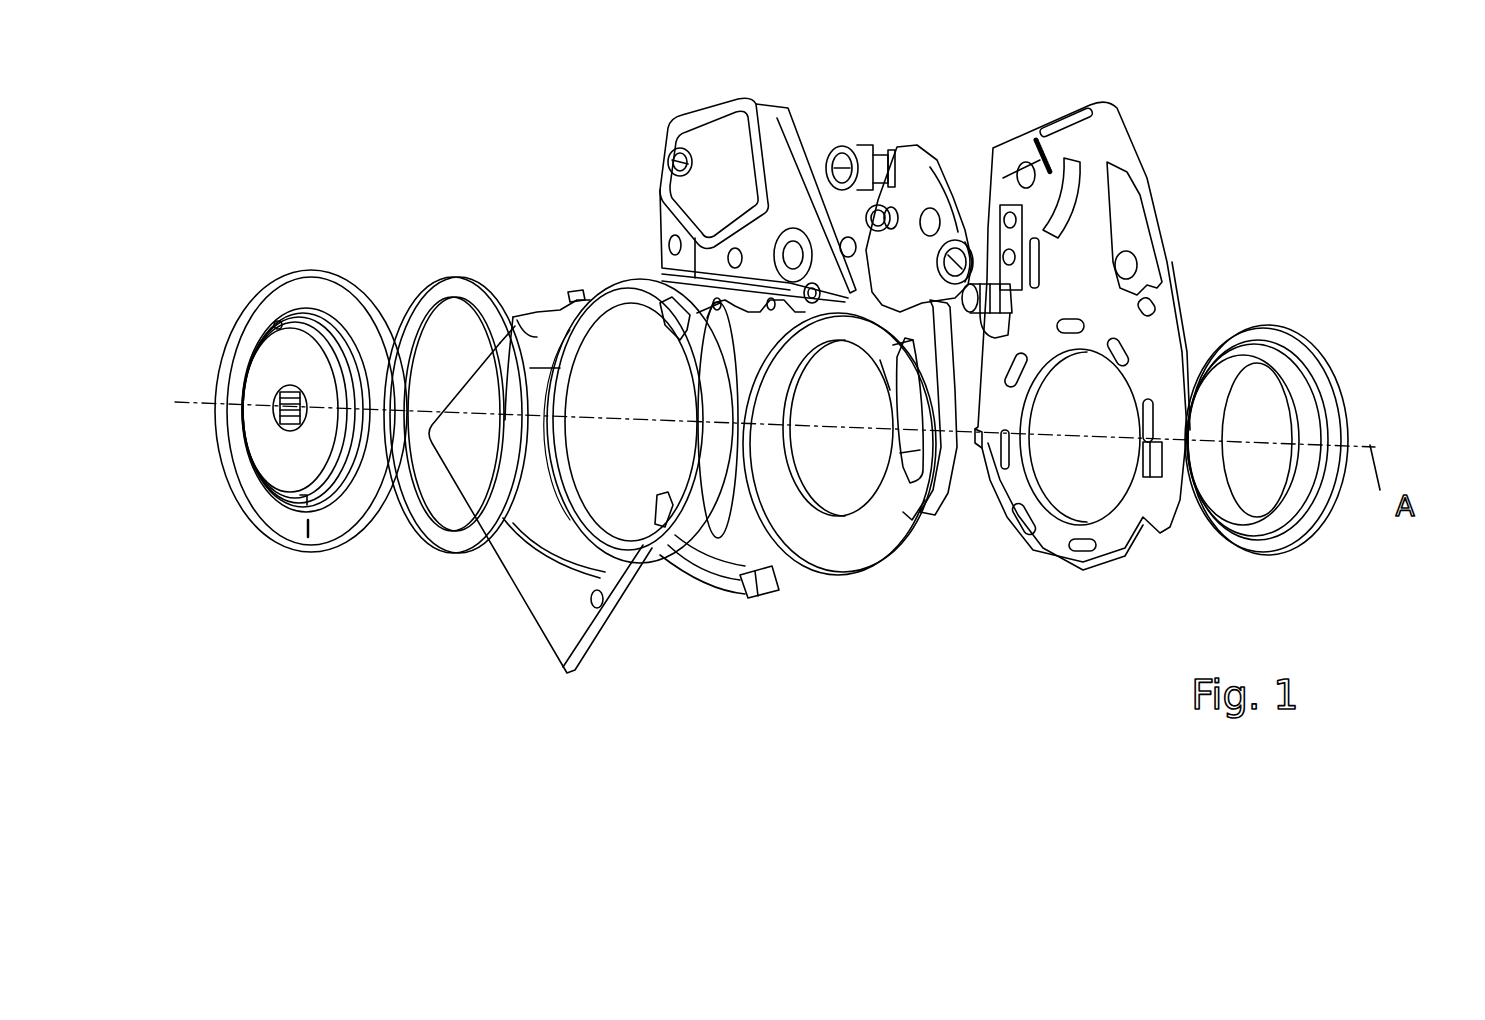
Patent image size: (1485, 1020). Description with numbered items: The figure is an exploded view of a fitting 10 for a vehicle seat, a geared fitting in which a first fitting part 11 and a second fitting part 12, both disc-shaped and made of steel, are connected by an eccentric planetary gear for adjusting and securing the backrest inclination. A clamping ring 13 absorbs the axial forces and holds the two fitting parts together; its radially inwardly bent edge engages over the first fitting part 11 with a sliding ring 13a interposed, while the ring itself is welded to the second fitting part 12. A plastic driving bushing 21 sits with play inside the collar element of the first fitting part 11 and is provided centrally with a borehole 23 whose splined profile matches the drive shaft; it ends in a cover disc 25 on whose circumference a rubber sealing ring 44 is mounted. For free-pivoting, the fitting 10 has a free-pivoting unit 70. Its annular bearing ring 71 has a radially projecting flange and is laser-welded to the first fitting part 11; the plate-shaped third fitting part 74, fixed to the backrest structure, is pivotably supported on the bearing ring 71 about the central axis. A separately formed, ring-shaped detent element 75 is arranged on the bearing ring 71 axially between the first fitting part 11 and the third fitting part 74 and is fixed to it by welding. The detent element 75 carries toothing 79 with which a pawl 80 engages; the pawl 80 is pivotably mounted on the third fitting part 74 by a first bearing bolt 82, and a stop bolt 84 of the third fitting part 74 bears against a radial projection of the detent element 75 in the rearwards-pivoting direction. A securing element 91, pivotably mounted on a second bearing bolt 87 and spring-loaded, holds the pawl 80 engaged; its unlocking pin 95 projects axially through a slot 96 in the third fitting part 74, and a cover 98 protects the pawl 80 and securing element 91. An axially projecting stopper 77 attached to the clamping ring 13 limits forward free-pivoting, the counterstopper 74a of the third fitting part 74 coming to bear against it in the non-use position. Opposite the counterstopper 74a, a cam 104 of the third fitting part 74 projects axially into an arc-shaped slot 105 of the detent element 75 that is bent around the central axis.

The fitting 10 is at (532, 180).
The first fitting part 11 is at (404, 400).
The second fitting part 12 is at (298, 417).
The clamping ring 13 is at (670, 545).
The sliding ring 13a is at (708, 476).
The driving bushing 21 is at (266, 476).
The borehole 23 is at (300, 392).
The cover disc 25 is at (263, 368).
The sealing ring 44 is at (330, 477).
The free-pivoting unit 70 is at (977, 100).
The bearing ring 71 is at (1271, 533).
The third fitting part 74 is at (1098, 366).
The counterstopper 74a is at (985, 447).
The detent element 75 is at (855, 555).
The stopper 77 is at (753, 594).
The toothing 79 is at (858, 280).
The pawl 80 is at (910, 247).
The first bearing bolt 82 is at (958, 255).
The stop bolt 84 is at (971, 315).
The second bearing bolt 87 is at (833, 155).
The securing element 91 is at (891, 190).
The unlocking pin 95 is at (877, 205).
The slot 96 is at (1073, 193).
The cover 98 is at (665, 143).
The cam 104 is at (1153, 480).
The slot 105 is at (923, 485).